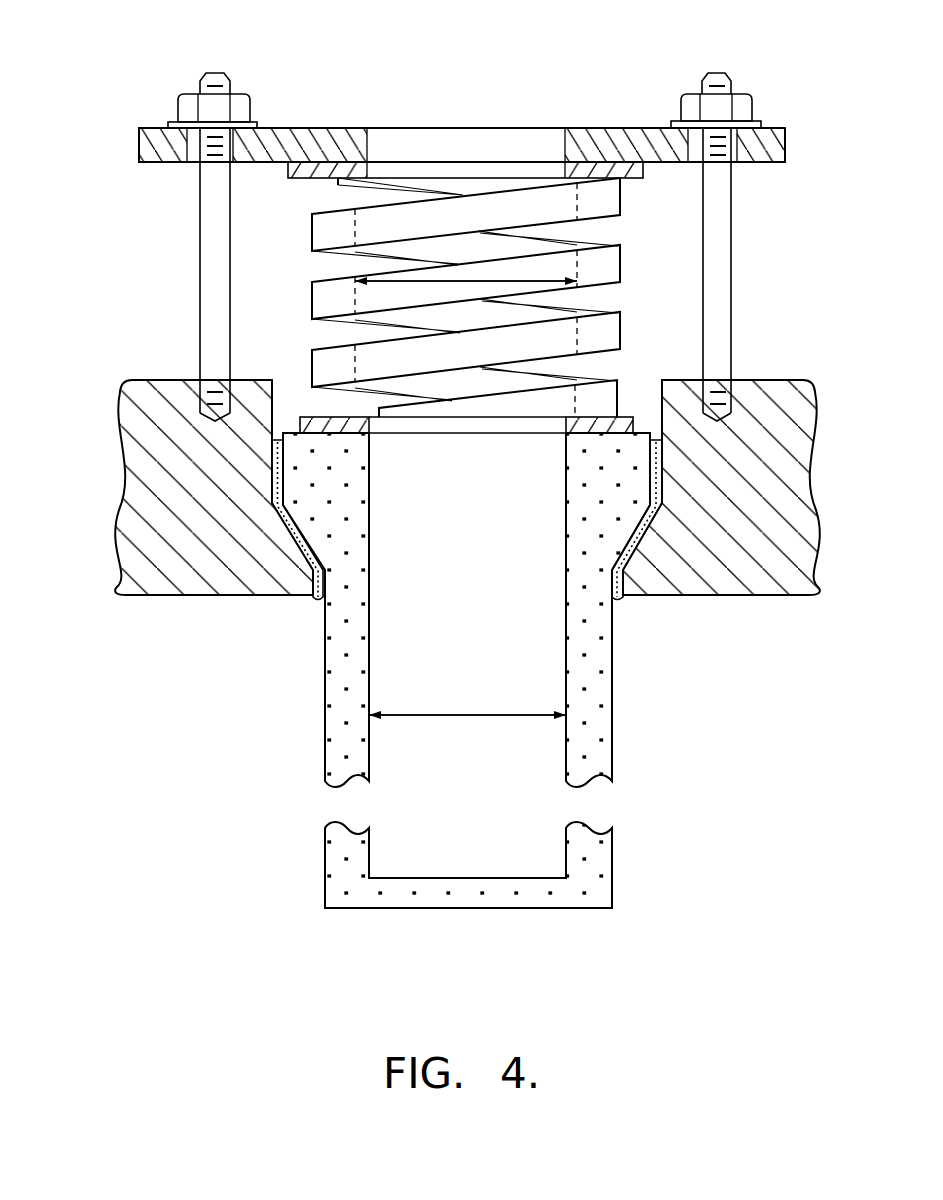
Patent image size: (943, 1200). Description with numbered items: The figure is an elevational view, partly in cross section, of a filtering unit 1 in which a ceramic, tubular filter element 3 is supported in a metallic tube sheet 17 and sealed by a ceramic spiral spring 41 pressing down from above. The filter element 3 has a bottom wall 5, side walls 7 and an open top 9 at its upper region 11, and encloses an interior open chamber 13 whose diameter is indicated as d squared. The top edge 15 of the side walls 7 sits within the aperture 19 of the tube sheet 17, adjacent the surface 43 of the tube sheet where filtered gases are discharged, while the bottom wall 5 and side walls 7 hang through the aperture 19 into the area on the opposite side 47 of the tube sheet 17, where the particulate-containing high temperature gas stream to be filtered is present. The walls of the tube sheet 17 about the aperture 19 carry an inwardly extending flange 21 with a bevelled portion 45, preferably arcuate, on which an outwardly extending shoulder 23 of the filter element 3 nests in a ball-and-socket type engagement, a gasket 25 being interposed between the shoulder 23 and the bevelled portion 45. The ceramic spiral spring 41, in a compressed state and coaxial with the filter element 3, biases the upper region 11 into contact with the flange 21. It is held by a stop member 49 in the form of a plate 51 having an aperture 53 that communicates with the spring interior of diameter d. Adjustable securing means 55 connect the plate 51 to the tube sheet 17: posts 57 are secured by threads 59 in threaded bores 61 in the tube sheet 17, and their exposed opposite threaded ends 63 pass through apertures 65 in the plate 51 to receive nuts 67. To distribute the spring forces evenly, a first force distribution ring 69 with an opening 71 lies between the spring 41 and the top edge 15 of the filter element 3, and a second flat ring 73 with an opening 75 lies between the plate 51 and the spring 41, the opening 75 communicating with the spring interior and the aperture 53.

The filtering unit 1 is at (765, 252).
The ceramic, tubular filter element 3 is at (297, 773).
The bottom wall 5 is at (478, 878).
The side walls 7 is at (606, 745).
The open top 9 is at (455, 440).
The upper region 11 is at (683, 527).
The interior open chamber 13 is at (476, 623).
The top edge 15 is at (645, 433).
The tube sheet 17 is at (182, 582).
The aperture 19 is at (292, 393).
The flange 21 is at (286, 532).
The shoulder 23 is at (312, 552).
The gasket 25 is at (653, 532).
The ceramic spiral spring 41 is at (292, 300).
The surface 43 is at (762, 378).
The bevelled portion 45 is at (621, 542).
The opposite side 47 is at (770, 592).
The stop member 49 is at (122, 142).
The plate 51 is at (300, 130).
The aperture 53 is at (445, 108).
The adjustable securing means 55 is at (766, 107).
The posts 57 is at (200, 300).
The threads 59 is at (718, 376).
The threaded bores 61 is at (700, 395).
The threaded end 63 is at (200, 88).
The apertures 65 is at (195, 165).
The nuts 67 is at (240, 105).
The ring 69 is at (333, 428).
The opening 71 is at (414, 430).
The flat ring 73 is at (597, 160).
The opening 75 is at (526, 162).